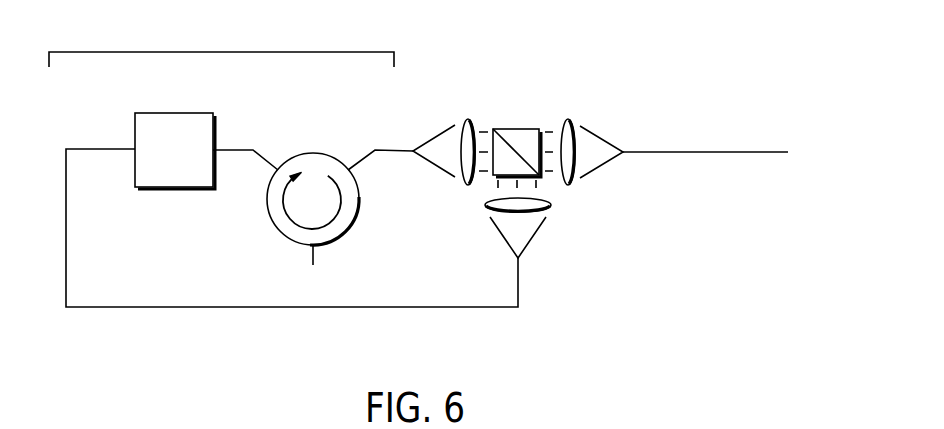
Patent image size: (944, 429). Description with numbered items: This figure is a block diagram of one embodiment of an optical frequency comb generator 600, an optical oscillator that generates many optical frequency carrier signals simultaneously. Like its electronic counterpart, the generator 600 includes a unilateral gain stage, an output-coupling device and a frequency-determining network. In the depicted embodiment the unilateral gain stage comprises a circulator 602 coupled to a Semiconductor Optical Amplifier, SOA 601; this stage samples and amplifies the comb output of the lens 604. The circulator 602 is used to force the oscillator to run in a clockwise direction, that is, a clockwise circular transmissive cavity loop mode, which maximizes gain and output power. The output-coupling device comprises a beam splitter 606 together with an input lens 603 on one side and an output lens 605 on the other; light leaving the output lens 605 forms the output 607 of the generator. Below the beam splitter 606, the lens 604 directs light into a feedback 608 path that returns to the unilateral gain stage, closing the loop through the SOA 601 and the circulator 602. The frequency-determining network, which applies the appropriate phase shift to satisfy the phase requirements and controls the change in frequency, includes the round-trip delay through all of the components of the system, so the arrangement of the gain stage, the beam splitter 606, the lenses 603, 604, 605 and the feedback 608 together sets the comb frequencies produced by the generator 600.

The optical frequency comb generator 600 is at (418, 196).
The semiconductor optical amplifier 601 is at (190, 177).
The circulator 602 is at (308, 151).
The input lens 603 is at (468, 185).
The lens 604 is at (548, 203).
The output lens 605 is at (568, 119).
The beam splitter 606 is at (517, 129).
The output 607 is at (722, 135).
The feedback 608 is at (195, 307).